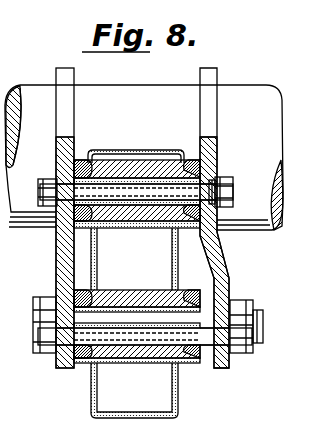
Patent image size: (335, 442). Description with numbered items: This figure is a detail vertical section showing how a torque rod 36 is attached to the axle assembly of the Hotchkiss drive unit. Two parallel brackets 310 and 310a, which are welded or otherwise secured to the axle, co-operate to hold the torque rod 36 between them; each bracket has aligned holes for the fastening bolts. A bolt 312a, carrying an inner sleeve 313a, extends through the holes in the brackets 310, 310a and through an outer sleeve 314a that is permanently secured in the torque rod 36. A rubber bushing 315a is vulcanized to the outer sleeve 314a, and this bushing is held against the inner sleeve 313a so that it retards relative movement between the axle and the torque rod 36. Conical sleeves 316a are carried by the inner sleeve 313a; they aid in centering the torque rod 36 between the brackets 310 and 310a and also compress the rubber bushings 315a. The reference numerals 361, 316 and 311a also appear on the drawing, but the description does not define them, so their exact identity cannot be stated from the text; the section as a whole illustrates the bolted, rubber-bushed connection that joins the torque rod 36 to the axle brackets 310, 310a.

The tubular housing 361 is at (285, 110).
The bracket 310 is at (57, 282).
The bracket 310a is at (213, 250).
The torque rod 36 is at (120, 150).
The outer sleeve 314a is at (181, 152).
The bushing end flange 316 is at (75, 229).
The conical sleeve 316a is at (78, 362).
The bolt 311a is at (222, 182).
The bolt 312a is at (40, 200).
The sleeve 313a is at (214, 214).
The rubber bushing 315a is at (218, 158).